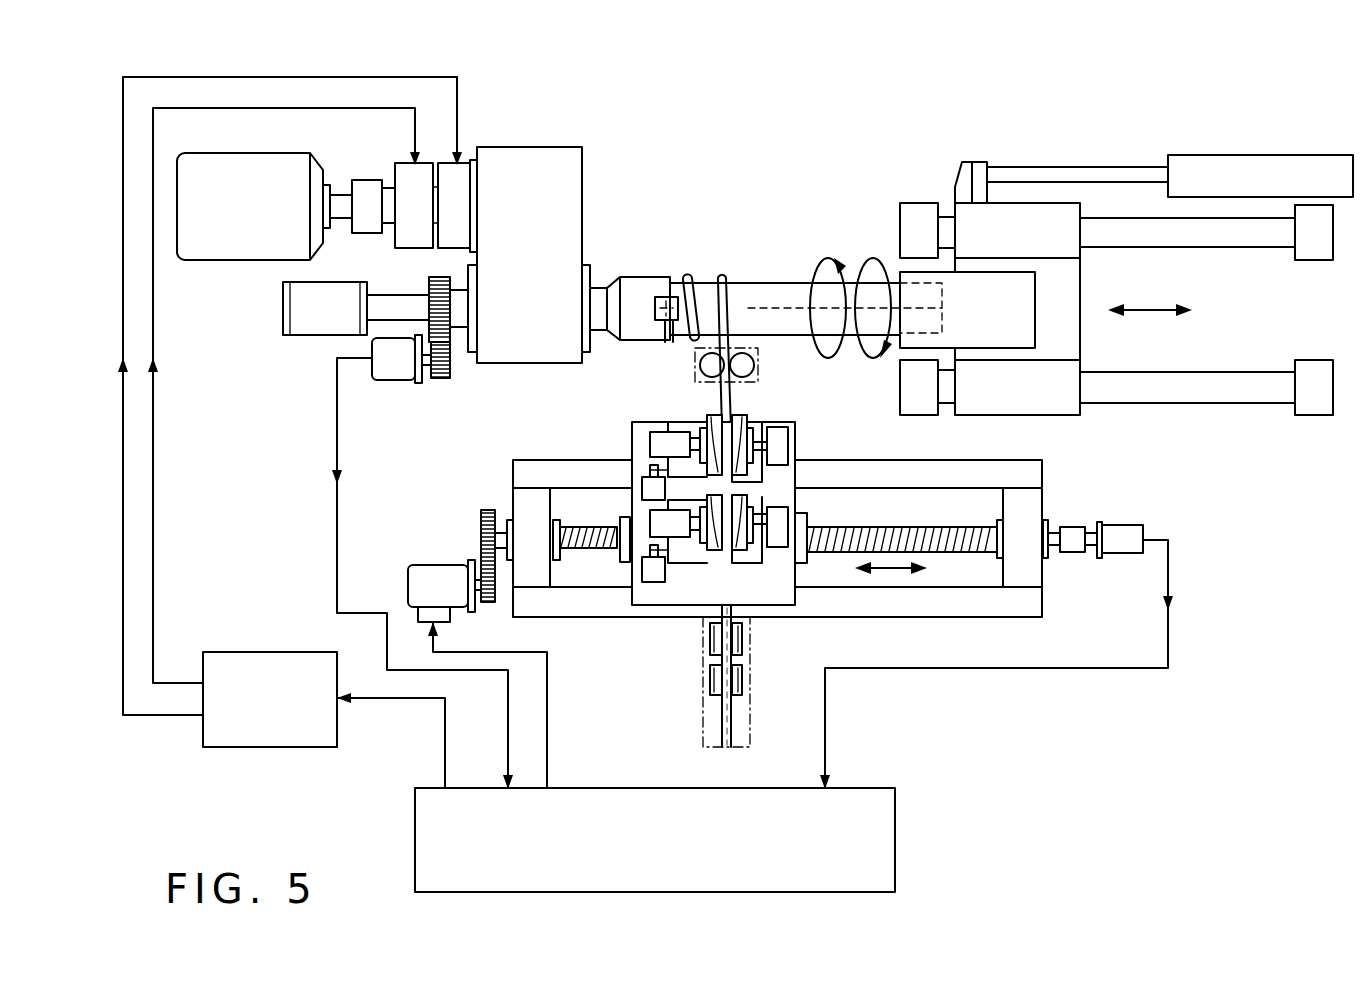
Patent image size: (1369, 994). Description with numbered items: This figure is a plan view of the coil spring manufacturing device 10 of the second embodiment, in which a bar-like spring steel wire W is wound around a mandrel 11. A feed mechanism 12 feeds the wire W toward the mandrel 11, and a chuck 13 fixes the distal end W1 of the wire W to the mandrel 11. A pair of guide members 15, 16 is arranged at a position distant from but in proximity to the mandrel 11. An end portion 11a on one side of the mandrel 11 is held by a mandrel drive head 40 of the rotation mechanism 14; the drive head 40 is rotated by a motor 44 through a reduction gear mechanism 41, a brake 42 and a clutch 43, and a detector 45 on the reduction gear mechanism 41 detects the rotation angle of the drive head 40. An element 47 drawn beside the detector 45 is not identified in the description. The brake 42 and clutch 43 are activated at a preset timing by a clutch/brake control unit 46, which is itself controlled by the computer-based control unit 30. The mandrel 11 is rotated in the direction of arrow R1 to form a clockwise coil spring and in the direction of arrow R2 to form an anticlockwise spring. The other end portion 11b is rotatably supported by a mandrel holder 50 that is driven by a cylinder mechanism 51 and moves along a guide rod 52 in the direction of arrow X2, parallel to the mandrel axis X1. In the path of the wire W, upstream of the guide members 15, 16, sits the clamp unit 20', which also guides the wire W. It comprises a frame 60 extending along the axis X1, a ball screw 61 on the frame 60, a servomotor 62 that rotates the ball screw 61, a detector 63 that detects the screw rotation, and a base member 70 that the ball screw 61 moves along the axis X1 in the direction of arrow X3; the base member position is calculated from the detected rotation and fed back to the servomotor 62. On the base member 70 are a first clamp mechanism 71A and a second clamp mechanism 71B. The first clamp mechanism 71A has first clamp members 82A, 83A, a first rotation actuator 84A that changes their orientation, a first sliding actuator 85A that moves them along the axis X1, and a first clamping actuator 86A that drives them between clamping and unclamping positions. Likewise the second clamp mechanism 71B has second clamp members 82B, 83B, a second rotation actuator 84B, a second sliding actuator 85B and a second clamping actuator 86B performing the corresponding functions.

The coil spring manufacturing device 10 is at (918, 104).
The mandrel 11 is at (780, 297).
The end portion on one side of the mandrel 11a is at (687, 278).
The end portion on the other side of the mandrel 11b is at (942, 318).
The feed mechanism 12 is at (750, 705).
The chuck 13 is at (663, 297).
The rotation mechanism 14 is at (548, 112).
The guide member 15 is at (700, 365).
The guide member 16 is at (755, 365).
The clamp unit 20' is at (499, 393).
The control unit 30 is at (643, 788).
The mandrel drive head 40 is at (628, 277).
The reduction gear mechanism 41 is at (575, 164).
The brake 42 is at (458, 163).
The clutch 43 is at (405, 178).
The motor 44 is at (262, 160).
The detector 45 is at (393, 380).
The clutch/brake control unit 46 is at (267, 652).
The encoder 47 is at (305, 327).
The mandrel holder 50 is at (1020, 283).
The cylinder mechanism 51 is at (1228, 157).
The guide rod 52 is at (1243, 243).
The frame 60 is at (937, 465).
The ball screw 61 is at (933, 528).
The servomotor 62 is at (440, 565).
The detector 63 is at (1122, 527).
The base member 70 is at (789, 606).
The first clamp mechanism 71A is at (800, 424).
The second clamp mechanism 71B is at (778, 490).
The first clamp member 82A is at (712, 415).
The second clamp member 82B is at (718, 550).
The first clamp member 83A is at (740, 415).
The second clamp member 83B is at (738, 550).
The first rotation actuator 84A is at (650, 487).
The second rotation actuator 84B is at (652, 583).
The first sliding actuator 85A is at (780, 442).
The second sliding actuator 85B is at (780, 520).
The first clamping actuator 86A is at (660, 440).
The second clamping actuator 86B is at (660, 522).
The wire W is at (722, 300).
The distal end of the wire W1 is at (655, 310).
The axis of the mandrel X1 is at (757, 306).
The direction of movement of the mandrel holder X2 is at (1148, 318).
The direction of movement of the base member X3 is at (885, 572).
The rotation direction for a clockwise coil spring R1 is at (820, 270).
The rotation direction for an anticlockwise coil spring R2 is at (862, 270).